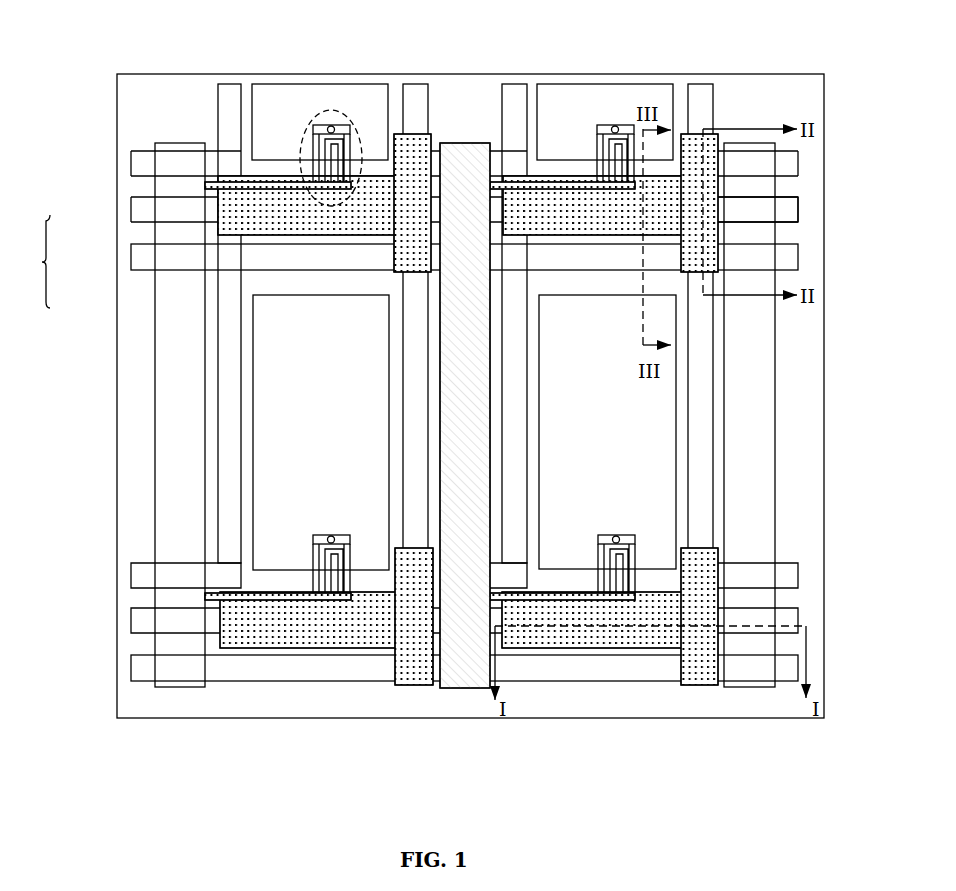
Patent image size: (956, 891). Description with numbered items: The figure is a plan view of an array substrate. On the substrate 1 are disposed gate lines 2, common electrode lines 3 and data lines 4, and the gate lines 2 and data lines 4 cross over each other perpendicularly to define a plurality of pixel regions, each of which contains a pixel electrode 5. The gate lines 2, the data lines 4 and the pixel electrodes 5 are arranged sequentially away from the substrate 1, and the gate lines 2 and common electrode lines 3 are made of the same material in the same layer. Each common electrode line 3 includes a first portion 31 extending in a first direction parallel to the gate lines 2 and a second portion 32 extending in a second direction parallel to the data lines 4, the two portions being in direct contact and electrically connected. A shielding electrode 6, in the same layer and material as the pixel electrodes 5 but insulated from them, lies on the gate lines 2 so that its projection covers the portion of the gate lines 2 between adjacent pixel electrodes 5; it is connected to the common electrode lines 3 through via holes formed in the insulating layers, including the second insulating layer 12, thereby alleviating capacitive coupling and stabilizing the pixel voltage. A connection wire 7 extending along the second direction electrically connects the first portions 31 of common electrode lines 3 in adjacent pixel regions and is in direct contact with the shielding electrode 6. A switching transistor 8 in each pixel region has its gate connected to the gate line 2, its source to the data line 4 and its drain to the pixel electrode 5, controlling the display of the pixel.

The substrate 1 is at (798, 98).
The gate line 2 is at (785, 210).
The common electrode line 3 is at (40, 261).
The first portion 31 is at (130, 258).
The second portion 32 is at (228, 330).
The data line 4 is at (748, 420).
The pixel electrode 5 is at (278, 494).
The shielding electrode 6 is at (290, 640).
The connection wire 7 is at (405, 670).
The switching transistor 8 is at (341, 112).
The second insulating layer 12 is at (424, 250).